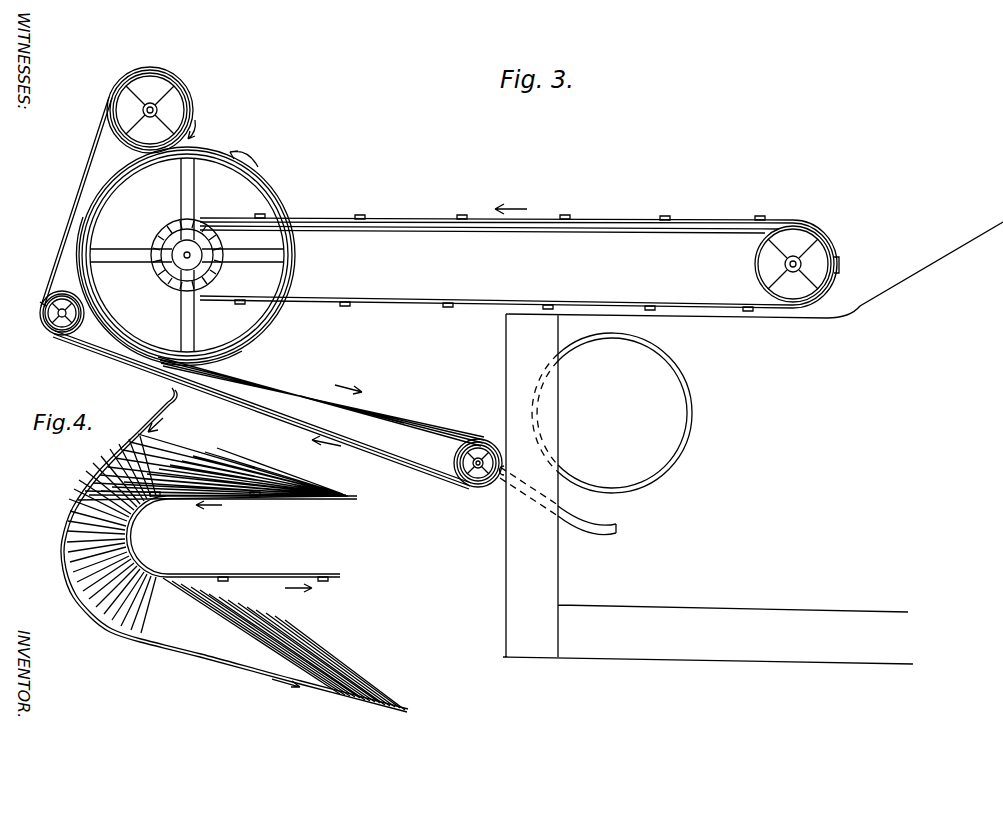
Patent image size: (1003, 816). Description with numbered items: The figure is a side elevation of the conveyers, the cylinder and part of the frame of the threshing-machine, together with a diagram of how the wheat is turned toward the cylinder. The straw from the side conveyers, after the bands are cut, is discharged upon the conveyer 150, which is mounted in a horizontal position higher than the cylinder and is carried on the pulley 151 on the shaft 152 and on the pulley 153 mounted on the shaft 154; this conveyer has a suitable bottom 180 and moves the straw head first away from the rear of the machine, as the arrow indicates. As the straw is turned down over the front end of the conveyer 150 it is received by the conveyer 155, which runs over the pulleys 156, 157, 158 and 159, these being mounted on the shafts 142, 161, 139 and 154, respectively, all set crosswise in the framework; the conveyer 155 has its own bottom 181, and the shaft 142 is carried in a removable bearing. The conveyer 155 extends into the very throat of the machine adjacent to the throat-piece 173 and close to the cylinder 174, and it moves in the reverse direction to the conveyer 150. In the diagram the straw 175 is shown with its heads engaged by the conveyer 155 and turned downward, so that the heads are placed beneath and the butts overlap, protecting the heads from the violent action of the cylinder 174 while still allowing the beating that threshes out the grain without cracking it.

In FIG. 3, the shaft 139 is at (160, 108).
In FIG. 3, the pulley 158 is at (193, 118).
In FIG. 3, the pulley 159 is at (270, 193).
In FIG. 3, the shaft 154 is at (189, 252).
In FIG. 3, the pulley 153 is at (222, 241).
In FIG. 3, the conveyer 150 is at (619, 222).
In FIG. 4, the conveyer 150 is at (289, 500).
In FIG. 3, the bottom 180 is at (701, 232).
In FIG. 3, the pulley 151 is at (799, 229).
In FIG. 3, the shaft 152 is at (802, 266).
In FIG. 3, the shaft 161 is at (55, 332).
In FIG. 3, the pulley 157 is at (43, 304).
In FIG. 3, the conveyer 155 is at (383, 418).
In FIG. 4, the conveyer 155 is at (81, 479).
In FIG. 3, the pulley 156 is at (479, 444).
In FIG. 3, the bottom 181 is at (404, 430).
In FIG. 3, the shaft 142 is at (469, 479).
In FIG. 3, the cylinder 174 is at (693, 433).
In FIG. 3, the throat-piece 173 is at (605, 534).
In FIG. 4, the straw 175 is at (223, 468).